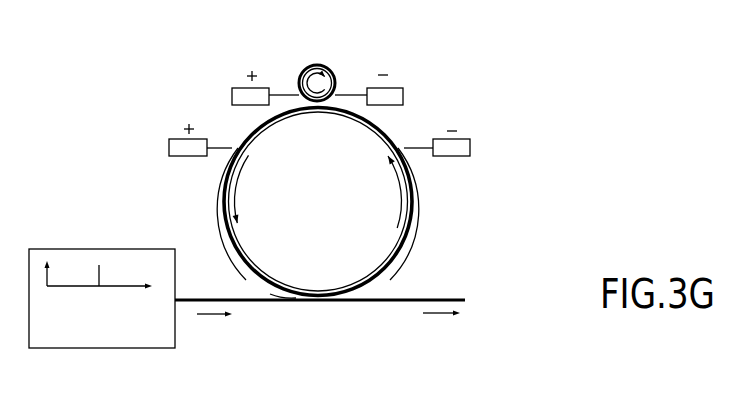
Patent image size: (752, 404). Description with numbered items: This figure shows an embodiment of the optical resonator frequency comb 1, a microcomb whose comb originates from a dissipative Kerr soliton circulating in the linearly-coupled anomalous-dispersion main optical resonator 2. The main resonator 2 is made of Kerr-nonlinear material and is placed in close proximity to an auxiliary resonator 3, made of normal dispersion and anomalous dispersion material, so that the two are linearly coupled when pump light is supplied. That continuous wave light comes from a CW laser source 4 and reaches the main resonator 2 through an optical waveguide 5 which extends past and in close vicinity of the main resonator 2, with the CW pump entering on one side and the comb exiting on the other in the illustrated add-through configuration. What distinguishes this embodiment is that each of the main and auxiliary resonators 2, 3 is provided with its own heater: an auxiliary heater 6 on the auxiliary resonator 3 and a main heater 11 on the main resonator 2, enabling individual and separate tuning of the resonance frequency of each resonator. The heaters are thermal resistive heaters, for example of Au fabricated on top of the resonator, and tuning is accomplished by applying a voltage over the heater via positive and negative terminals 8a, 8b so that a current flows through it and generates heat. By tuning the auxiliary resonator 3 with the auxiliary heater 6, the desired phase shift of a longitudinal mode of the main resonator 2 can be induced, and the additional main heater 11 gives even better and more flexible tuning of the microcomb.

The optical resonator frequency comb 1 is at (133, 71).
The main optical resonator 2 is at (279, 296).
The auxiliary resonator 3 is at (329, 66).
The continuous wave laser source 4 is at (128, 249).
The optical waveguide 5 is at (245, 302).
The auxiliary heater 6 is at (303, 66).
The positive terminal 8a is at (233, 88).
The negative terminal 8b is at (398, 88).
The main heater 11 is at (225, 237).